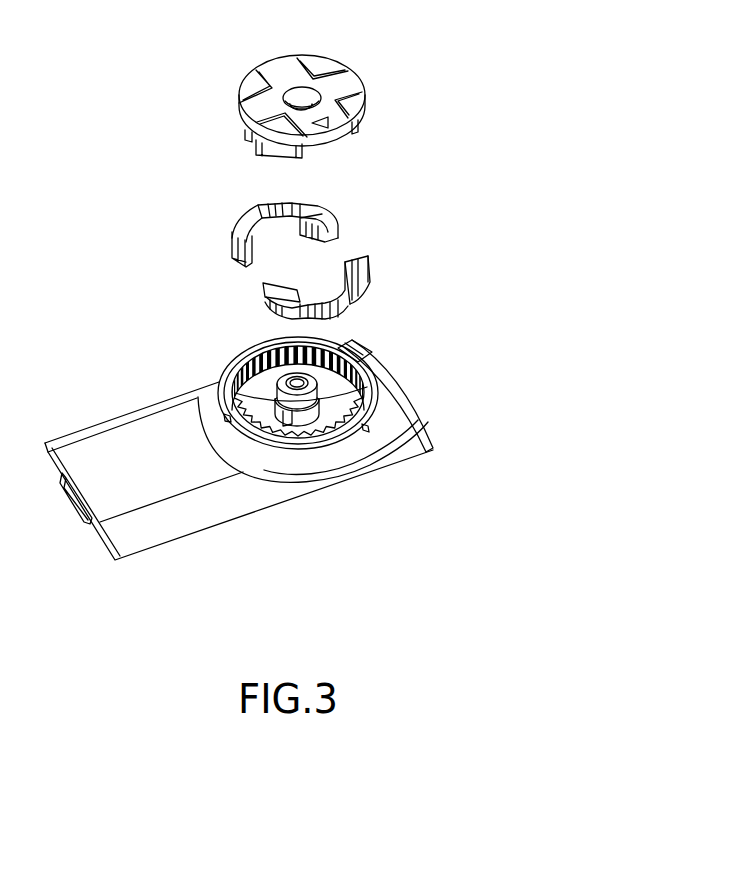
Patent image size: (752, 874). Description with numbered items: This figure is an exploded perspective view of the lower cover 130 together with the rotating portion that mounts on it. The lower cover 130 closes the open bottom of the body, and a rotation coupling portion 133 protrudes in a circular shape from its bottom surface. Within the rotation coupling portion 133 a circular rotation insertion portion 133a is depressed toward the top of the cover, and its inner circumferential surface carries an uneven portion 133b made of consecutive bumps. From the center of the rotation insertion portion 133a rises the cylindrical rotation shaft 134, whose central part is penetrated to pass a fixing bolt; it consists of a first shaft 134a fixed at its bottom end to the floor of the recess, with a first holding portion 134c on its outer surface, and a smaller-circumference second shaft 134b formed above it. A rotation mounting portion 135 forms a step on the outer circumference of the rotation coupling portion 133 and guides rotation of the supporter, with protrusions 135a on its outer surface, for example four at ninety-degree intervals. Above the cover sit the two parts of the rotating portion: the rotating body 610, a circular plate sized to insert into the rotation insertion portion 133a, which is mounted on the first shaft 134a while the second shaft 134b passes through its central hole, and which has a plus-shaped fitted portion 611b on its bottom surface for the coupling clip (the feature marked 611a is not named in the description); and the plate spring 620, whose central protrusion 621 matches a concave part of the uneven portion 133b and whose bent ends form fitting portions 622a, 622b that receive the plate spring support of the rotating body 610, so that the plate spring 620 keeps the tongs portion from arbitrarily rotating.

The lower cover 130 is at (284, 436).
The rotation coupling portion 133 is at (329, 436).
The rotation insertion portion 133a is at (226, 418).
The uneven portion 133b is at (365, 345).
The rotation shaft 134 is at (308, 458).
The first shaft 134a is at (315, 410).
The second shaft 134b is at (383, 392).
The first holding portion 134c is at (287, 427).
The rotation mounting portion 135 is at (329, 443).
The protrusion 135a is at (263, 340).
The rotating body 610 is at (300, 83).
The center hole 611a is at (290, 93).
The fitted portion 611b is at (277, 70).
The plate spring 620 is at (290, 246).
The protrusion 621 is at (265, 220).
The fitting portion 622a is at (316, 216).
The fitting portion 622b is at (232, 232).